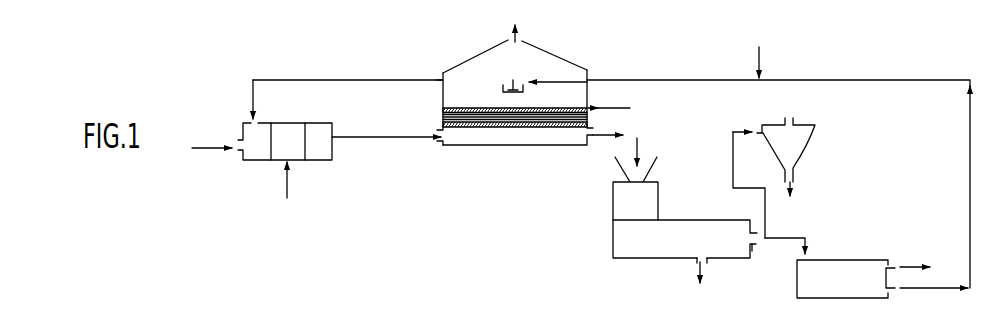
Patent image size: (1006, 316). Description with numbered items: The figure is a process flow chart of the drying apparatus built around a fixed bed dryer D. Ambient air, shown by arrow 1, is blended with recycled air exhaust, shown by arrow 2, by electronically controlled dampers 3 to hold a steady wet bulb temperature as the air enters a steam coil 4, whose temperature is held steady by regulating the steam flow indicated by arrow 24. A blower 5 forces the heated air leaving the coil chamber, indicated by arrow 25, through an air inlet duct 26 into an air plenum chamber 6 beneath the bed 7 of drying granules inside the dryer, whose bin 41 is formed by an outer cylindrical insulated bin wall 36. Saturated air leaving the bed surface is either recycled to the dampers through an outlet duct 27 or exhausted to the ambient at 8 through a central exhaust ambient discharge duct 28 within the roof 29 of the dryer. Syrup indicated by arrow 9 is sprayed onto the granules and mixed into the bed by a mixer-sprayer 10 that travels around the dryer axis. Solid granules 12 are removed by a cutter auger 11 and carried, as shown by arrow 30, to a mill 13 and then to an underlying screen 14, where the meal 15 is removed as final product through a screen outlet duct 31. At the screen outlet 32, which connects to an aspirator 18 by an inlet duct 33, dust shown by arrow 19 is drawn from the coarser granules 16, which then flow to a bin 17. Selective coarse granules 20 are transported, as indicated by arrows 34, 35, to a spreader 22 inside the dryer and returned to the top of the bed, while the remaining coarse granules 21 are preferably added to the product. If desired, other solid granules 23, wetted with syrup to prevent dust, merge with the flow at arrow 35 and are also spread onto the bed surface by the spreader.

The ambient air arrow 1 is at (226, 147).
The air exhaust arrow 2 is at (257, 106).
The electronically controlled dampers 3 is at (263, 150).
The steam coil 4 is at (294, 150).
The blower 5 is at (324, 150).
The air plenum chamber 6 is at (530, 146).
The bed of drying granules 7 is at (443, 116).
The ambient exhaust 8 is at (510, 29).
The syrup arrow 9 is at (602, 113).
The mixer-sprayer 10 is at (486, 107).
The cutter auger 11 is at (492, 129).
The solid granules 12 is at (614, 140).
The mill 13 is at (613, 200).
The screen 14 is at (613, 243).
The meal 15 is at (704, 282).
The coarser granules 16 is at (800, 240).
The bin 17 is at (846, 287).
The aspirator 18 is at (798, 150).
The dust arrow 19 is at (735, 151).
The selective coarse granules 20 is at (945, 290).
The remaining coarse granules 21 is at (901, 266).
The spreader 22 is at (505, 86).
The solid granules 23 is at (765, 66).
The steam flow arrow 24 is at (290, 193).
The heated air arrow 25 is at (385, 139).
The air inlet duct 26 is at (440, 143).
The outlet duct 27 is at (441, 71).
The central exhaust ambient discharge duct 28 is at (524, 43).
The roof 29 is at (471, 55).
The transport arrow 30 is at (638, 142).
The screen outlet duct 31 is at (708, 262).
The screen outlet 32 is at (764, 255).
The inlet duct 33 is at (758, 125).
The transport arrow 34 is at (969, 193).
The transport arrow 35 is at (888, 84).
The outer cylindrical insulated bin wall 36 is at (589, 97).
The bin 41 is at (590, 71).
The fixed bed dryer D is at (580, 51).